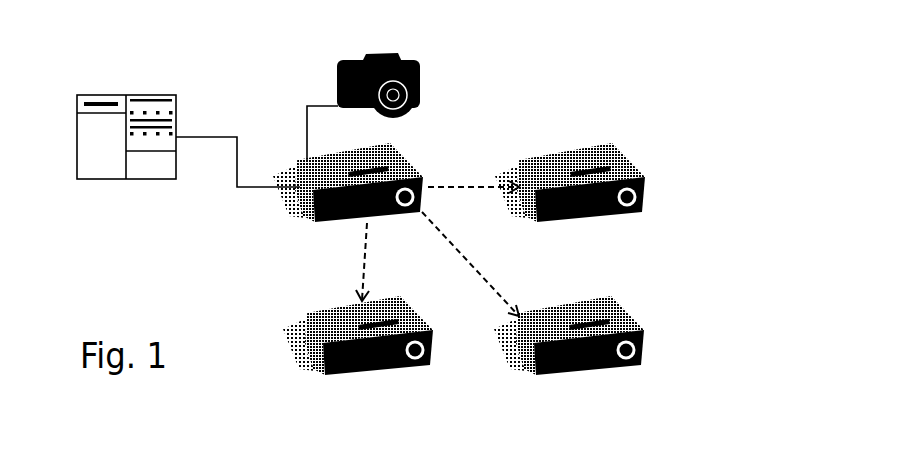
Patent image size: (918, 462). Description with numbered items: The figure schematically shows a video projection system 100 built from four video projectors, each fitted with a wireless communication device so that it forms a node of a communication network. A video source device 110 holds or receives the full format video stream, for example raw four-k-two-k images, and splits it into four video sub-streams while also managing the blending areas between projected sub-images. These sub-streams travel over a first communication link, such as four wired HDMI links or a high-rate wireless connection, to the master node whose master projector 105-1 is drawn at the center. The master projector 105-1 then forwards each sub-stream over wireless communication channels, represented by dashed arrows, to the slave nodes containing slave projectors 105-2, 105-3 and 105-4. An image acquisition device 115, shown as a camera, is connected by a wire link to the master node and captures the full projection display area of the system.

The video projection system 100 is at (703, 71).
The video source device 110 is at (138, 179).
The image acquisition device 115 is at (338, 68).
The master projector 105-1 is at (318, 222).
The slave projector 105-2 is at (646, 195).
The slave projector 105-3 is at (330, 377).
The slave projector 105-4 is at (538, 377).